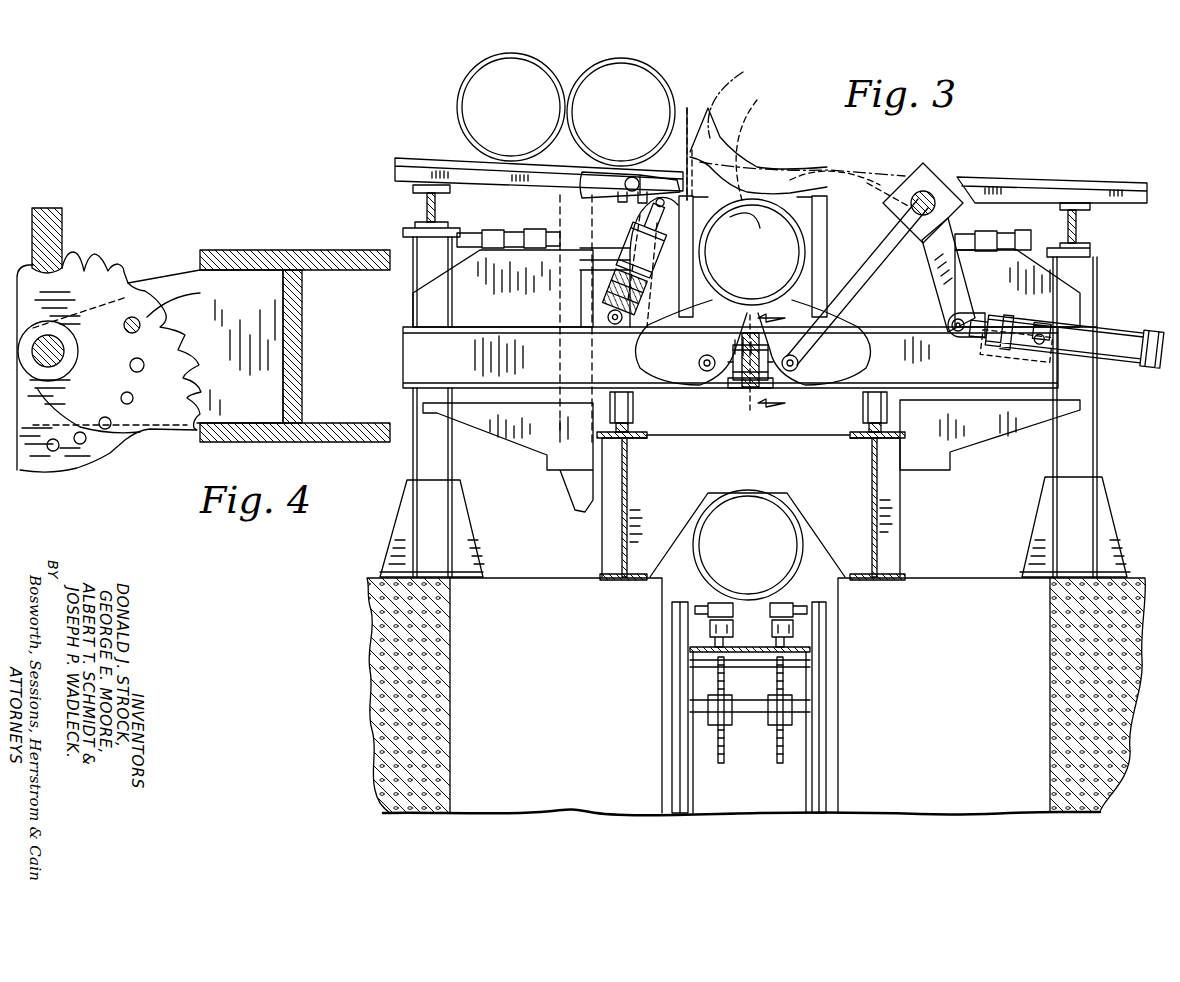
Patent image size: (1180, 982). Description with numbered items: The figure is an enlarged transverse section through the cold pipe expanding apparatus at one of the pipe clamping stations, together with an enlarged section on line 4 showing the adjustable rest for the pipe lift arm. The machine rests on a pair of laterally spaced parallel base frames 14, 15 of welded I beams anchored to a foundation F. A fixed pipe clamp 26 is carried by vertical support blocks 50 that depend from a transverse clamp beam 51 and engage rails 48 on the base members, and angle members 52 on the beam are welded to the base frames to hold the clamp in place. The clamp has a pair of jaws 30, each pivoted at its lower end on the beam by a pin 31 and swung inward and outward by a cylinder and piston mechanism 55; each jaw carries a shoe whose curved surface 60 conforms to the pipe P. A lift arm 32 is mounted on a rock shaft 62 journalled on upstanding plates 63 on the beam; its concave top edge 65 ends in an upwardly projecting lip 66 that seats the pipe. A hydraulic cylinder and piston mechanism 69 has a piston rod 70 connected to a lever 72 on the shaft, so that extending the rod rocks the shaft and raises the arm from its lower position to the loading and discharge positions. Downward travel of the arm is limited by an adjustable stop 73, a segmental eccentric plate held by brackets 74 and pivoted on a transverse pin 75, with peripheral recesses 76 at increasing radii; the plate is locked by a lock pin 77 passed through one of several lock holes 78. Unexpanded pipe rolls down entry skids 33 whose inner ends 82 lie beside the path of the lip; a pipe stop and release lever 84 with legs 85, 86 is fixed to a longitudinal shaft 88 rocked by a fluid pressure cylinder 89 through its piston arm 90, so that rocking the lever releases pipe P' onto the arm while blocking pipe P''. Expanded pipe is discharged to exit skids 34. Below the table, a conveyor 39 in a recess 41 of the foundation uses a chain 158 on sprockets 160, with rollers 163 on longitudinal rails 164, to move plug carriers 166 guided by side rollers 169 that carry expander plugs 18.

In FIG. 3, the section line 4— 4 is at (773, 360).
In FIG. 3, the base frame 14 is at (880, 540).
In FIG. 3, the base frame 15 is at (615, 528).
In FIG. 3, the expander plug 18 is at (792, 578).
In FIG. 3, the pipe clamp 26 is at (952, 145).
In FIG. 3, the clamp jaws 30 is at (652, 212).
In FIG. 3, the pivot pin 31 is at (698, 372).
In FIG. 3, the lift arm 32 is at (860, 277).
In FIG. 4, the lift arm 32 is at (48, 206).
In FIG. 3, the entry skids 33 is at (443, 143).
In FIG. 3, the exit skids 34 is at (1108, 162).
In FIG. 3, the conveyor 39 is at (808, 640).
In FIG. 3, the recess 41 is at (828, 700).
In FIG. 3, the rails 48 is at (630, 428).
In FIG. 3, the vertical support blocks 50 is at (620, 405).
In FIG. 3, the transverse clamp beam 51 is at (432, 358).
In FIG. 4, the transverse clamp beam 51 is at (274, 250).
In FIG. 3, the angle members 52 is at (630, 440).
In FIG. 3, the cylinder and piston mechanism 55 is at (510, 240).
In FIG. 3, the curved surface 60 is at (752, 220).
In FIG. 3, the rock shaft 62 is at (935, 188).
In FIG. 3, the upstanding plates 63 is at (932, 200).
In FIG. 3, the top edge 65 is at (757, 302).
In FIG. 3, the lip 66 is at (720, 300).
In FIG. 3, the hydraulic cylinder and piston mechanism 69 is at (1108, 342).
In FIG. 3, the piston rod 70 is at (970, 322).
In FIG. 3, the lever 72 is at (950, 268).
In FIG. 3, the adjustable stop 73 is at (745, 392).
In FIG. 4, the adjustable stop 73 is at (100, 278).
In FIG. 3, the brackets 74 is at (708, 400).
In FIG. 4, the brackets 74 is at (180, 283).
In FIG. 4, the transverse pin 75 is at (58, 340).
In FIG. 4, the peripheral recesses 76 is at (88, 262).
In FIG. 4, the lock pin 77 is at (130, 340).
In FIG. 4, the lock holes 78 is at (144, 368).
In FIG. 3, the inner ends 82 is at (756, 141).
In FIG. 3, the pipe stop and release lever 84 is at (631, 177).
In FIG. 3, the leg 85 is at (600, 175).
In FIG. 3, the leg 86 is at (684, 190).
In FIG. 3, the longitudinal shaft 88 is at (643, 190).
In FIG. 3, the fluid pressure cylinder 89 is at (614, 278).
In FIG. 3, the piston arm 90 is at (644, 226).
In FIG. 3, the conveyor chain 158 is at (708, 606).
In FIG. 3, the sprockets 160 is at (780, 760).
In FIG. 3, the rollers 163 is at (650, 668).
In FIG. 3, the longitudinal rails 164 is at (785, 665).
In FIG. 3, the plug carrier 166 is at (800, 595).
In FIG. 3, the side rollers 169 is at (712, 612).
In FIG. 3, the pipe P is at (753, 210).
In FIG. 3, the pipe P' is at (633, 102).
In FIG. 3, the pipe P'' is at (514, 98).
In FIG. 3, the foundation F is at (395, 648).